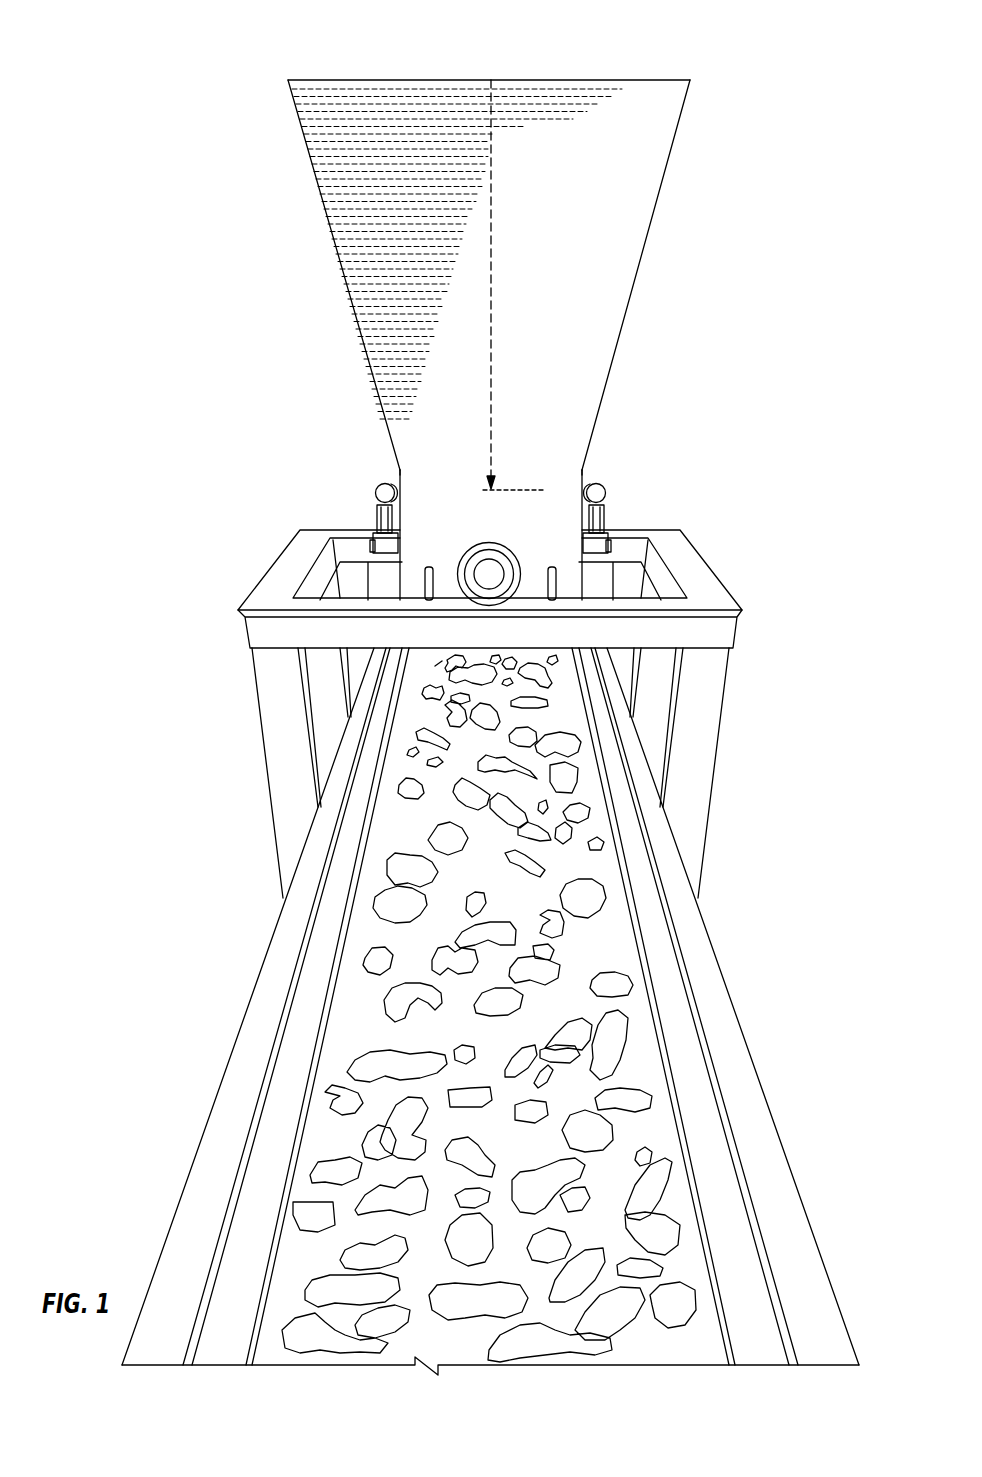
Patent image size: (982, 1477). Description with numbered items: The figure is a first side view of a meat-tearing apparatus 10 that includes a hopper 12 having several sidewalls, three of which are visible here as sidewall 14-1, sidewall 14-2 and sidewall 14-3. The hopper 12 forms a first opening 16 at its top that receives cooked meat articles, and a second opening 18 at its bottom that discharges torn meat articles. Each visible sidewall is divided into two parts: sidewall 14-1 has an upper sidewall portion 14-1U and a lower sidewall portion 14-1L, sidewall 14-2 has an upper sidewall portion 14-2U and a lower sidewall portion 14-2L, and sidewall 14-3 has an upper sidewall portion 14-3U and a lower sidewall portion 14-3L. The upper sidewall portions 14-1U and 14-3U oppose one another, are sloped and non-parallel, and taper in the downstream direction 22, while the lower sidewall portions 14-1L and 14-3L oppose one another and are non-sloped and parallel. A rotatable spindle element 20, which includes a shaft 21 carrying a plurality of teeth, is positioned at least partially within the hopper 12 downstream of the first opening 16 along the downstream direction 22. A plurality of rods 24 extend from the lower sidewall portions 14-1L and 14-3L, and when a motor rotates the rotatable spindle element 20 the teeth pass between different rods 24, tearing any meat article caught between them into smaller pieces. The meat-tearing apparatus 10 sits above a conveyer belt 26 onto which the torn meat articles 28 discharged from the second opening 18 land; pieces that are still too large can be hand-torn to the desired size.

The meat-tearing apparatus 10 is at (775, 45).
The hopper 12 is at (166, 46).
The sidewall 14-1 is at (178, 66).
The upper sidewall portion 14-1U is at (276, 82).
The lower sidewall portion 14-1L is at (355, 473).
The sidewall 14-2 is at (460, 435).
The upper sidewall portion 14-2U is at (597, 252).
The lower sidewall portion 14-2L is at (540, 522).
The sidewall 14-3 is at (800, 66).
The upper sidewall portion 14-3U is at (702, 80).
The lower sidewall portion 14-3L is at (626, 473).
The first opening 16 is at (517, 79).
The second opening 18 is at (511, 602).
The rotatable spindle element 20 is at (521, 549).
The shaft 21 is at (489, 577).
The downstream direction 22 is at (492, 203).
The rods 24 is at (366, 548).
The conveyer belt 26 is at (712, 897).
The torn meat articles 28 is at (377, 1067).